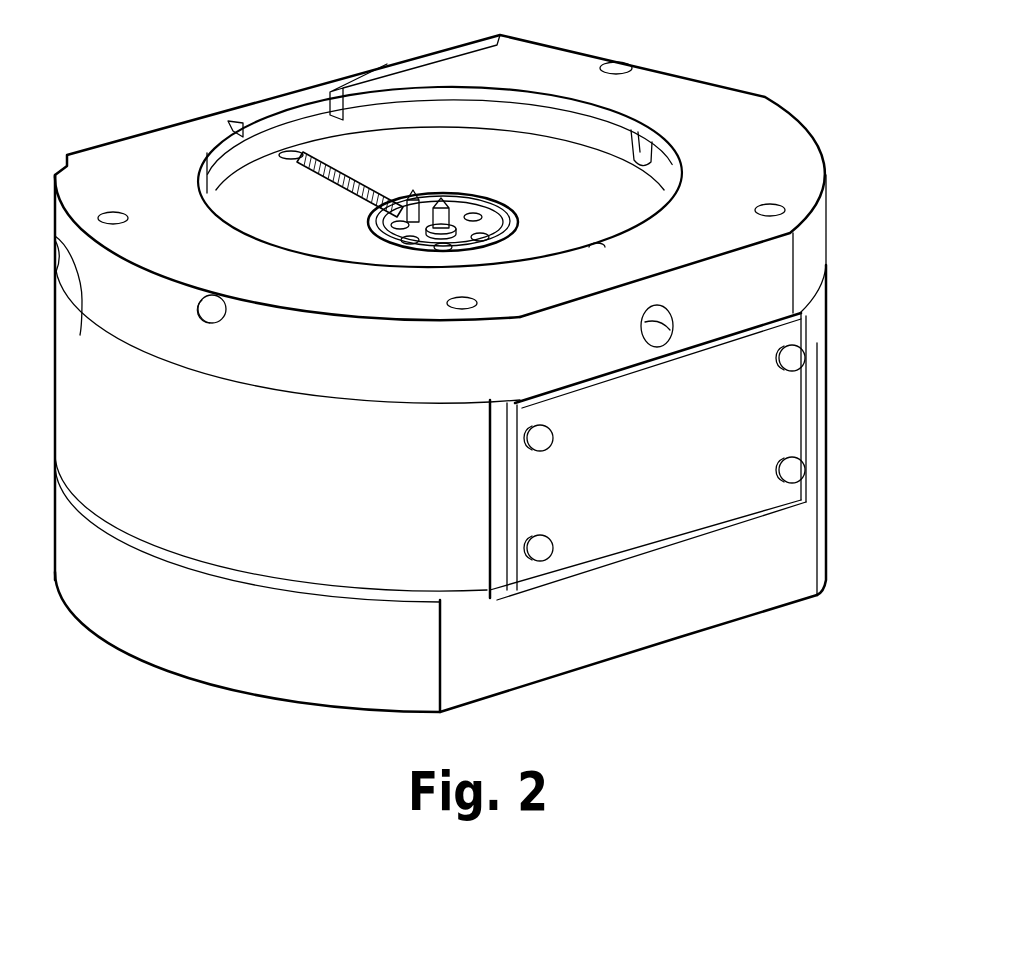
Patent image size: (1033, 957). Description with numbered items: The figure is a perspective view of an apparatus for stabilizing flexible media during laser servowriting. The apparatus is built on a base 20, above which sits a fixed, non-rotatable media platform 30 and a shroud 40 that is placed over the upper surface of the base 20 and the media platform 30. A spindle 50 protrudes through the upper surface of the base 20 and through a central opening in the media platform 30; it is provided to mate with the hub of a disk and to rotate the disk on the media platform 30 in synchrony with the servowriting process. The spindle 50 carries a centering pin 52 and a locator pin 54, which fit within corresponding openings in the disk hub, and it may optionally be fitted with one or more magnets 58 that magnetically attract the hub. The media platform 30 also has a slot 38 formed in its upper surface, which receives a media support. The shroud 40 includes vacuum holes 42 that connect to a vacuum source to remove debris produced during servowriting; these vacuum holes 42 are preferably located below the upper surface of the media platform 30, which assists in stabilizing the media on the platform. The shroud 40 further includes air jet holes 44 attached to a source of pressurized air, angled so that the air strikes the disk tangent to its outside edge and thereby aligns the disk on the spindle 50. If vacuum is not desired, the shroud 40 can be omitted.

The base 20 is at (818, 343).
The media platform 30 is at (436, 150).
The slot 38 is at (298, 152).
The shroud 40 is at (775, 113).
The vacuum holes 42 is at (673, 337).
The air jet holes 44 is at (630, 128).
The spindle 50 is at (510, 208).
The centering pin 52 is at (441, 203).
The locator pin 54 is at (414, 196).
The magnets 58 is at (369, 228).